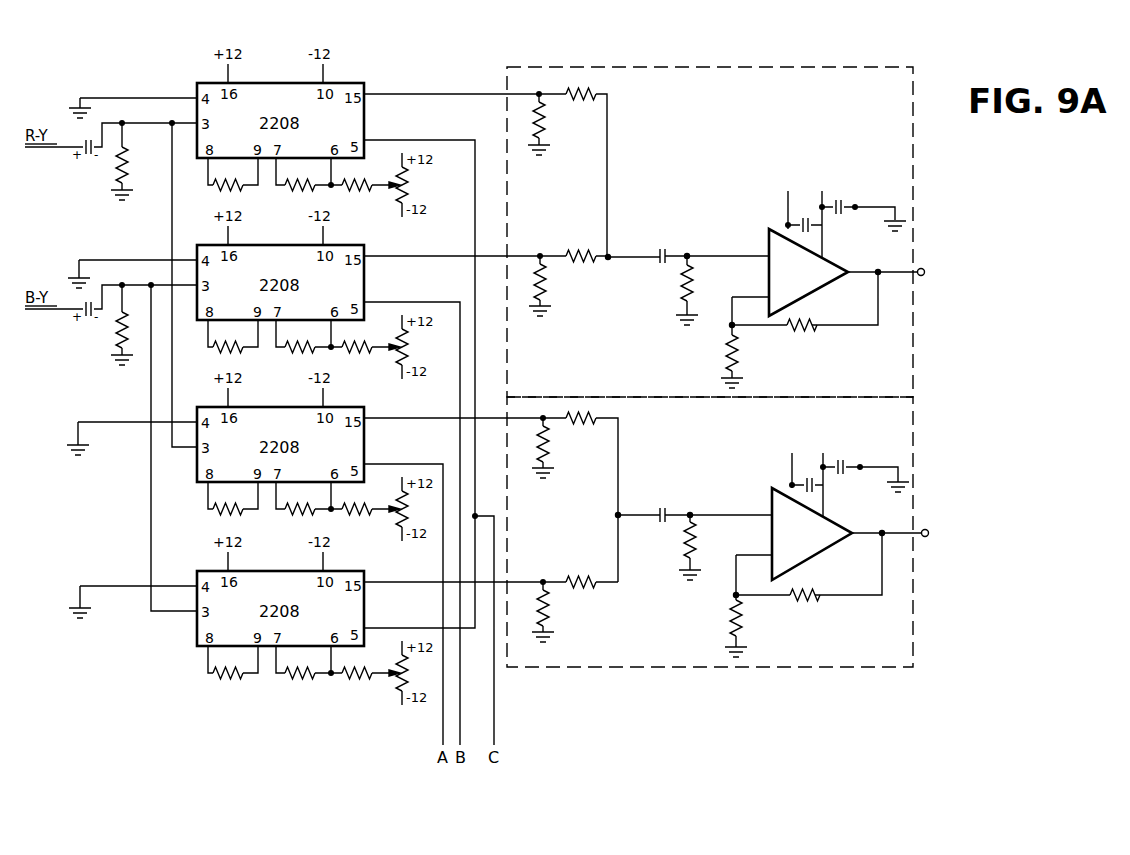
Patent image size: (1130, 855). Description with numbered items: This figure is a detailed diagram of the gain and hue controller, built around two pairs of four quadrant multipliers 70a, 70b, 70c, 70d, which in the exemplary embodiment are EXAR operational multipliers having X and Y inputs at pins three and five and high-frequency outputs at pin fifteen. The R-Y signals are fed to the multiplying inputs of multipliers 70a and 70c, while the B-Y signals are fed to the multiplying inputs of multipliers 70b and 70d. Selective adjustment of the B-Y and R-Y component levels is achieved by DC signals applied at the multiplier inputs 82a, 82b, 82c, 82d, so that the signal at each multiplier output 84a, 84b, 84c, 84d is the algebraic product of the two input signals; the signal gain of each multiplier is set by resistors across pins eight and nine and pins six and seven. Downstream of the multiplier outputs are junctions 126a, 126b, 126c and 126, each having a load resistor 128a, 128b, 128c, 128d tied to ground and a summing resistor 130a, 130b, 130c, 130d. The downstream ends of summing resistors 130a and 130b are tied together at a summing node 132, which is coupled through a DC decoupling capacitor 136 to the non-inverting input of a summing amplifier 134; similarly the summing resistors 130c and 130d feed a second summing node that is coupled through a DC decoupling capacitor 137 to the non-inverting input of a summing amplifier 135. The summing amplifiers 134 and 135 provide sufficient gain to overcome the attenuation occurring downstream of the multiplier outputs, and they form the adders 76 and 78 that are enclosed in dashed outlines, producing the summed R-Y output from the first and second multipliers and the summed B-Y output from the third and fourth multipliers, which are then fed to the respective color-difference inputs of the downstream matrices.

The four quadrant multiplier 70a is at (270, 83).
The four quadrant multiplier 70b is at (270, 245).
The four quadrant multiplier 70c is at (272, 407).
The four quadrant multiplier 70d is at (272, 571).
The multiplier input 82a is at (366, 140).
The multiplier input 82b is at (366, 302).
The multiplier input 82c is at (366, 464).
The multiplier input 82d is at (366, 628).
The multiplier output 84a is at (364, 94).
The multiplier output 84b is at (364, 256).
The multiplier output 84c is at (364, 418).
The multiplier output 84d is at (364, 582).
The adder 76 is at (913, 225).
The adder 78 is at (915, 508).
The junction 126a is at (541, 100).
The junction 126b is at (540, 262).
The junction 126c is at (548, 424).
The junction 126 is at (548, 585).
The load resistor 128a is at (530, 140).
The load resistor 128b is at (545, 286).
The load resistor 128c is at (533, 458).
The load resistor 128d is at (548, 626).
The summing resistor 130a is at (585, 92).
The summing resistor 130b is at (580, 252).
The summing resistor 130c is at (592, 418).
The summing resistor 130d is at (598, 598).
The summing node 132 is at (608, 260).
The summing amplifier 134 is at (770, 234).
The summing amplifier 135 is at (773, 492).
The DC decoupling capacitor 136 is at (662, 247).
The DC decoupling capacitor 137 is at (664, 505).